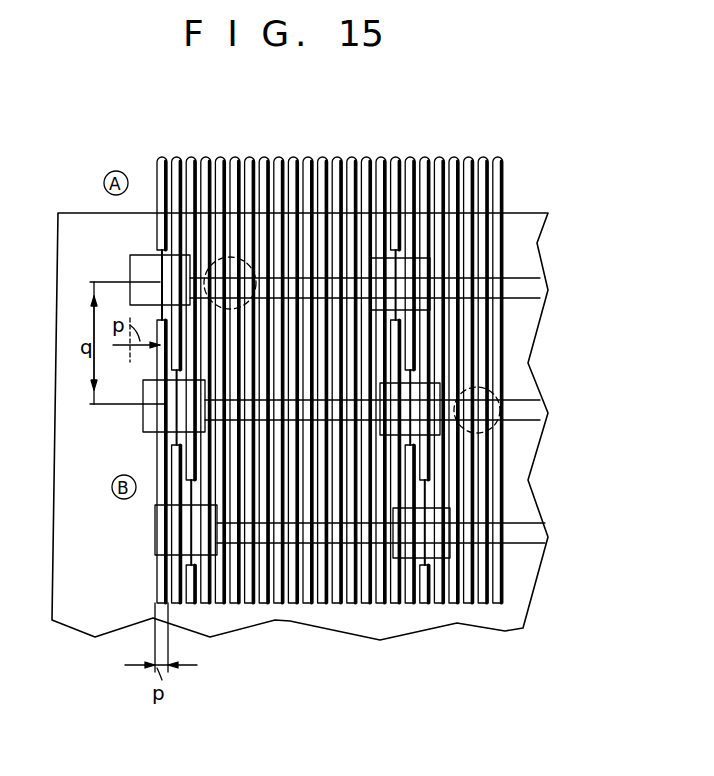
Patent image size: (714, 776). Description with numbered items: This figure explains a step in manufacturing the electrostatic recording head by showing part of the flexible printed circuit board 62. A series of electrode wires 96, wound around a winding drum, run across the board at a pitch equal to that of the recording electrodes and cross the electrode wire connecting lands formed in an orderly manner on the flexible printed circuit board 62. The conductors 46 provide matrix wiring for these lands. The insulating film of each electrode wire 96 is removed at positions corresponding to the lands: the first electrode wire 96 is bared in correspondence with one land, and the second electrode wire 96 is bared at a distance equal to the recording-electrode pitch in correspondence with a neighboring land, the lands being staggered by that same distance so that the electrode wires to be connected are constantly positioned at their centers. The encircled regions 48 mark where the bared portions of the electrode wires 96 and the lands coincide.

The electrode wire 96 is at (160, 180).
The flexible printed circuit board 62 is at (528, 210).
The conductors for matrix wiring of the lands 46 is at (138, 255).
The contact region 48 is at (493, 420).